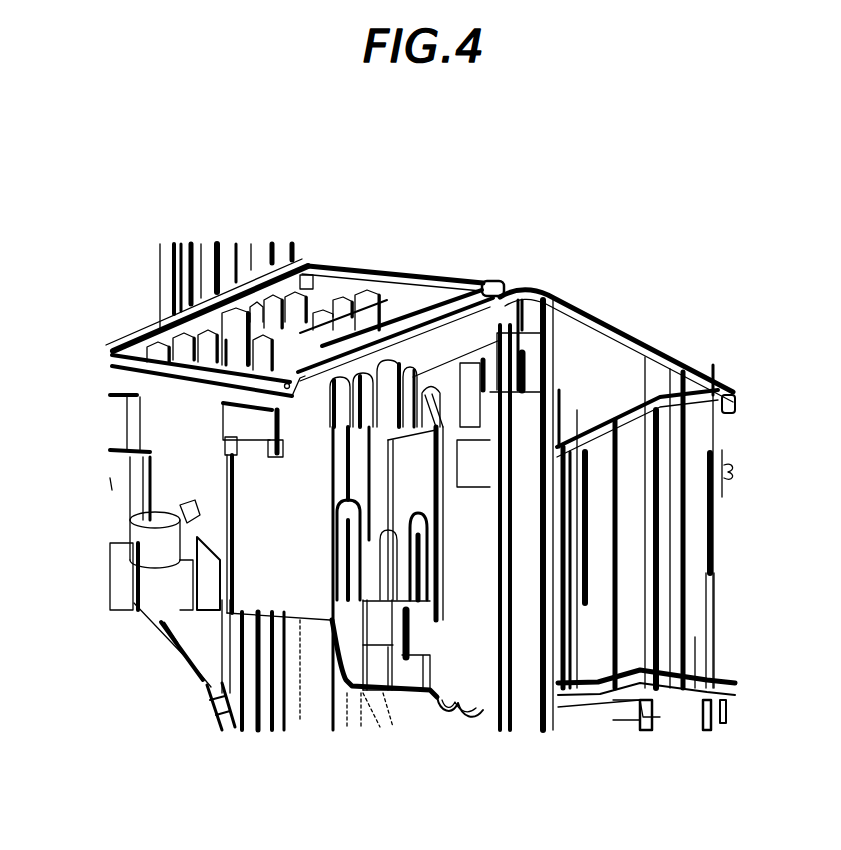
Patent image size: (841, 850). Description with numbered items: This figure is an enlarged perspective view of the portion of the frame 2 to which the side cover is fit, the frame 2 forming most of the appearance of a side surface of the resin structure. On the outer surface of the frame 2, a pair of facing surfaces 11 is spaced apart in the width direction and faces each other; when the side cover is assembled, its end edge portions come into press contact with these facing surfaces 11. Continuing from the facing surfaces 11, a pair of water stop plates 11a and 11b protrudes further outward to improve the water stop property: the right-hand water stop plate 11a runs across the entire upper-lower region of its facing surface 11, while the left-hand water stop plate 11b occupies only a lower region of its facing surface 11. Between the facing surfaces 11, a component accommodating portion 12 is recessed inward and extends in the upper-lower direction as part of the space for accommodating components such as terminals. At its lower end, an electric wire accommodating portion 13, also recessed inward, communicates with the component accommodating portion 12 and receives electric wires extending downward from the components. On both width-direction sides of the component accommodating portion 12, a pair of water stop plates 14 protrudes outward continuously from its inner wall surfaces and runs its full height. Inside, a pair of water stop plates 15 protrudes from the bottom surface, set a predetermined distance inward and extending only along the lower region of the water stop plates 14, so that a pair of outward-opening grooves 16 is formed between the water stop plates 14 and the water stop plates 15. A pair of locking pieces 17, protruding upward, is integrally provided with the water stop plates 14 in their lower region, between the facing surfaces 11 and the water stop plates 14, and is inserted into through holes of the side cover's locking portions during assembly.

The frame 2 is at (560, 262).
The facing surfaces 11 is at (416, 283).
The water stop plate 11a is at (438, 612).
The water stop plate 11b is at (295, 583).
The component accommodating portion 12 is at (397, 462).
The electric wire accommodating portion 13 is at (400, 632).
The water stop plates 14 is at (377, 478).
The water stop plates 15 is at (430, 577).
The grooves 16 is at (343, 553).
The locking pieces 17 is at (342, 518).